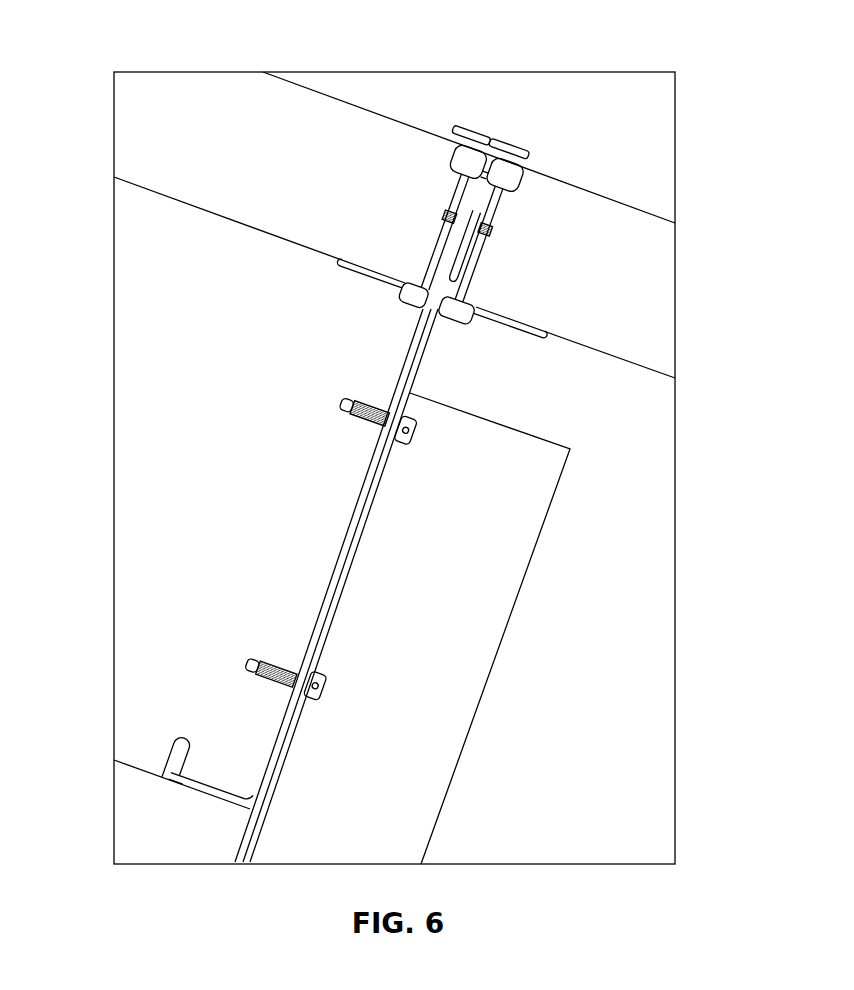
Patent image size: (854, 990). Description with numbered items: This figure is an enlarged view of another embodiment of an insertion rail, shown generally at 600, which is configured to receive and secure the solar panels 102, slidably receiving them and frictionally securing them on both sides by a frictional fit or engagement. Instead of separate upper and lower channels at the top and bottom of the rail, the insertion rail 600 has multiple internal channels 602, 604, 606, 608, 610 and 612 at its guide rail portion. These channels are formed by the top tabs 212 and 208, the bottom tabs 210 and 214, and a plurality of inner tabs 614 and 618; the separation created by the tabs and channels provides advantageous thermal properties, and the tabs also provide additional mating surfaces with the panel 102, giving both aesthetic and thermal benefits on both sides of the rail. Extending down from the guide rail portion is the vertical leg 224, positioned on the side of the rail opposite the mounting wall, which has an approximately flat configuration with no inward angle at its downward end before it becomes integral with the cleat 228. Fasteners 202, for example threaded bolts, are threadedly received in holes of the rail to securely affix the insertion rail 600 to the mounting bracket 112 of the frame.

The solar panel 102 is at (122, 160).
The mounting bracket 112 is at (512, 626).
The fasteners 202 is at (345, 403).
The top tab 208 is at (495, 140).
The bottom tab 210 is at (540, 338).
The top tab 212 is at (461, 128).
The bottom tab 214 is at (338, 262).
The vertical leg 224 is at (328, 583).
The cleat 228 is at (188, 775).
The insertion rail 600 is at (484, 133).
The internal channel 602 is at (510, 165).
The internal channel 604 is at (462, 160).
The internal channel 606 is at (490, 229).
The internal channel 608 is at (445, 215).
The internal channel 610 is at (455, 318).
The internal channel 612 is at (410, 302).
The inner tab 614 is at (495, 176).
The inner tab 618 is at (460, 262).